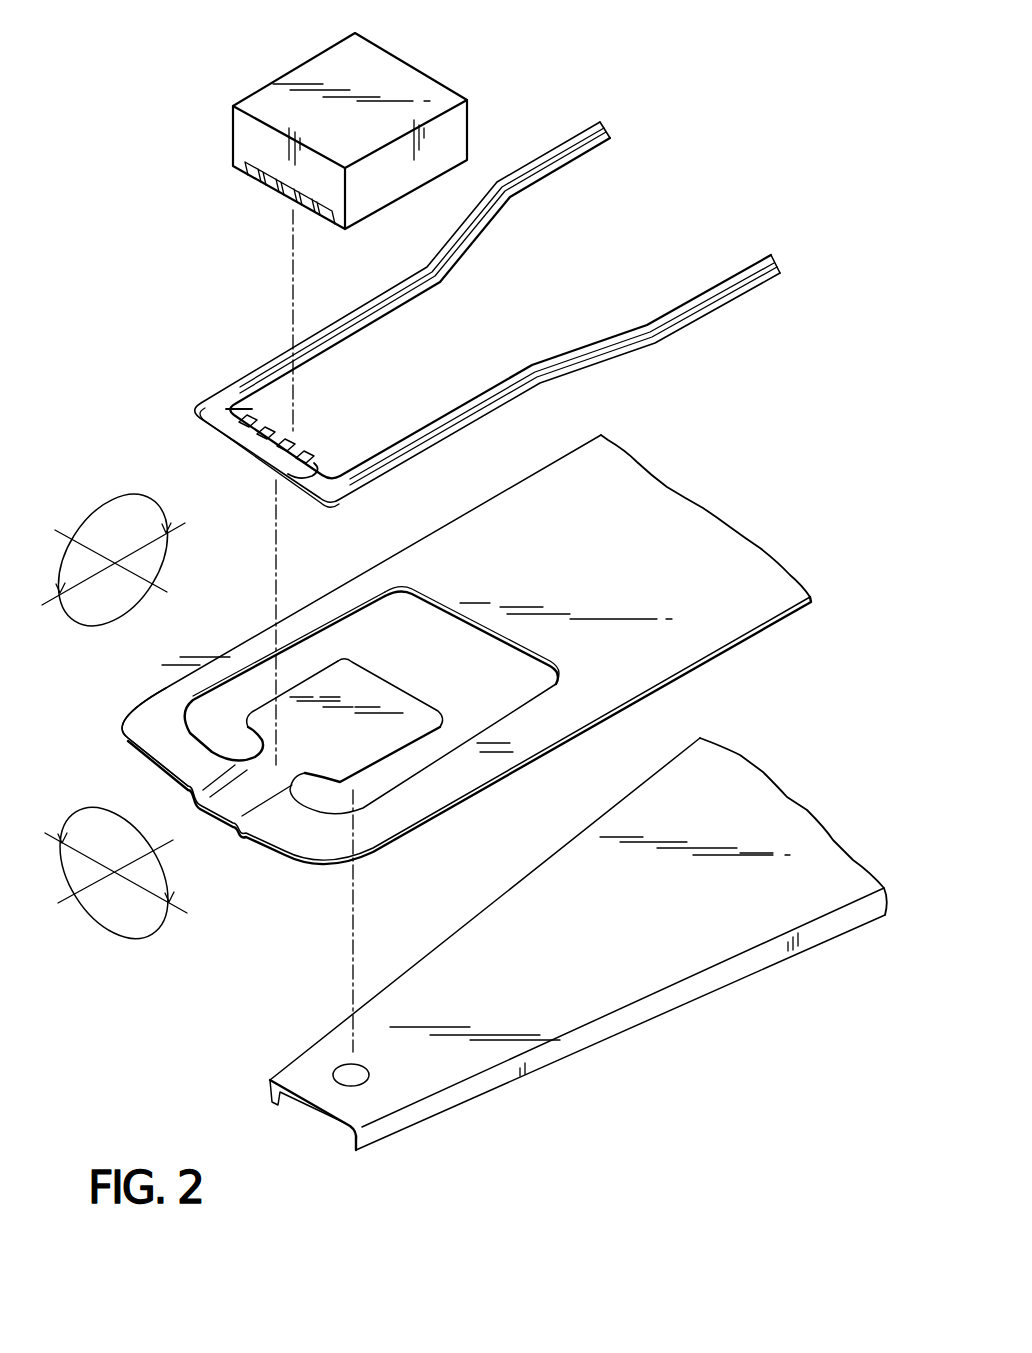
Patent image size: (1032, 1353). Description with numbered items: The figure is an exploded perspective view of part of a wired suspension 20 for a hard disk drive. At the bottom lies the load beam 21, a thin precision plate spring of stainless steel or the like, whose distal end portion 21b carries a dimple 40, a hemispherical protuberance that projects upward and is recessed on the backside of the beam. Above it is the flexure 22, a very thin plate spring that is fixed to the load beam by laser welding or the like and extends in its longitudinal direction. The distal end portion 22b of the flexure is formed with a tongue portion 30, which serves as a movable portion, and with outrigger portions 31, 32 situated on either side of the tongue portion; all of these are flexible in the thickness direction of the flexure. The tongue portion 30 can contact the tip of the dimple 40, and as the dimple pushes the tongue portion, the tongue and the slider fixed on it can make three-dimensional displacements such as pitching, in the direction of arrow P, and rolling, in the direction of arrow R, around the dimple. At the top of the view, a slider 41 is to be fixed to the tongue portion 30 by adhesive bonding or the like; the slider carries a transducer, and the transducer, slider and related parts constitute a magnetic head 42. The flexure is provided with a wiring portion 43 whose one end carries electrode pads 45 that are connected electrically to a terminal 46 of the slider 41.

The wired suspension 20 is at (157, 283).
The load beam 21 is at (617, 965).
The distal end portion of the load beam 21b is at (383, 1092).
The flexure 22 is at (697, 628).
The distal end portion of the flexure 22b is at (164, 687).
The tongue portion 30 is at (373, 698).
The outrigger portion 31 is at (242, 650).
The outrigger portion 32 is at (423, 807).
The dimple 40 is at (345, 1062).
The slider 41 is at (233, 140).
The magnetic head 42 is at (456, 71).
The wiring portion 43 is at (613, 360).
The electrode pads 45 is at (307, 451).
The terminal 46 is at (266, 186).
The pitching direction arrow P is at (107, 503).
The rolling direction arrow R is at (164, 862).